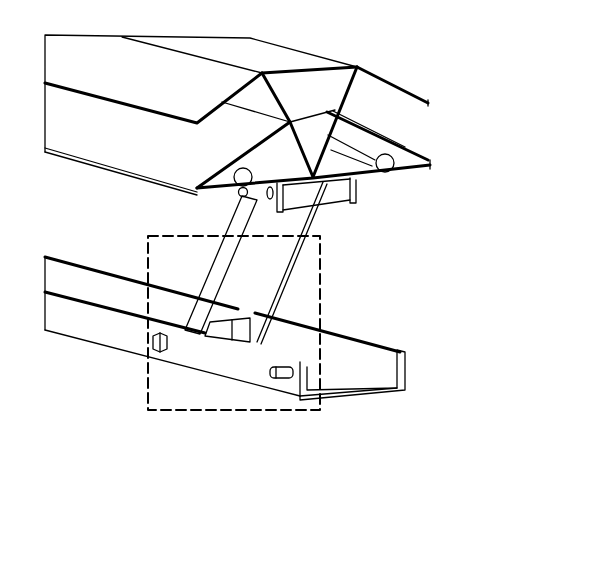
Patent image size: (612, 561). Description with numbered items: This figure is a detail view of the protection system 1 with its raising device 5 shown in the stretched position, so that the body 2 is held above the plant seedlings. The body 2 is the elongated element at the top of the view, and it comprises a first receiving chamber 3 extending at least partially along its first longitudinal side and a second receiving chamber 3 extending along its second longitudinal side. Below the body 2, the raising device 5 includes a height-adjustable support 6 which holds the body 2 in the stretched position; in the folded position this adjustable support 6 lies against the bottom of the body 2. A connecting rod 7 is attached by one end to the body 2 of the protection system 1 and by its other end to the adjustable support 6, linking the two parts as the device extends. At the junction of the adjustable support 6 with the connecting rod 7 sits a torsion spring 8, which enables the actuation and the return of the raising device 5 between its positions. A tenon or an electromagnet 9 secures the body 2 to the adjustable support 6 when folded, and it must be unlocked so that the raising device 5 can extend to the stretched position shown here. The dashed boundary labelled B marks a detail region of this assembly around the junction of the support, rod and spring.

The protection system 1 is at (472, 289).
The body 2 is at (335, 64).
The receiving chamber 3 is at (226, 131).
The raising device 5 is at (128, 387).
The height-adjustable support 6 is at (368, 382).
The connecting rod 7 is at (303, 205).
The torsion spring 8 is at (258, 342).
The tenon or electromagnet 9 is at (268, 374).
The detail area B is at (148, 242).